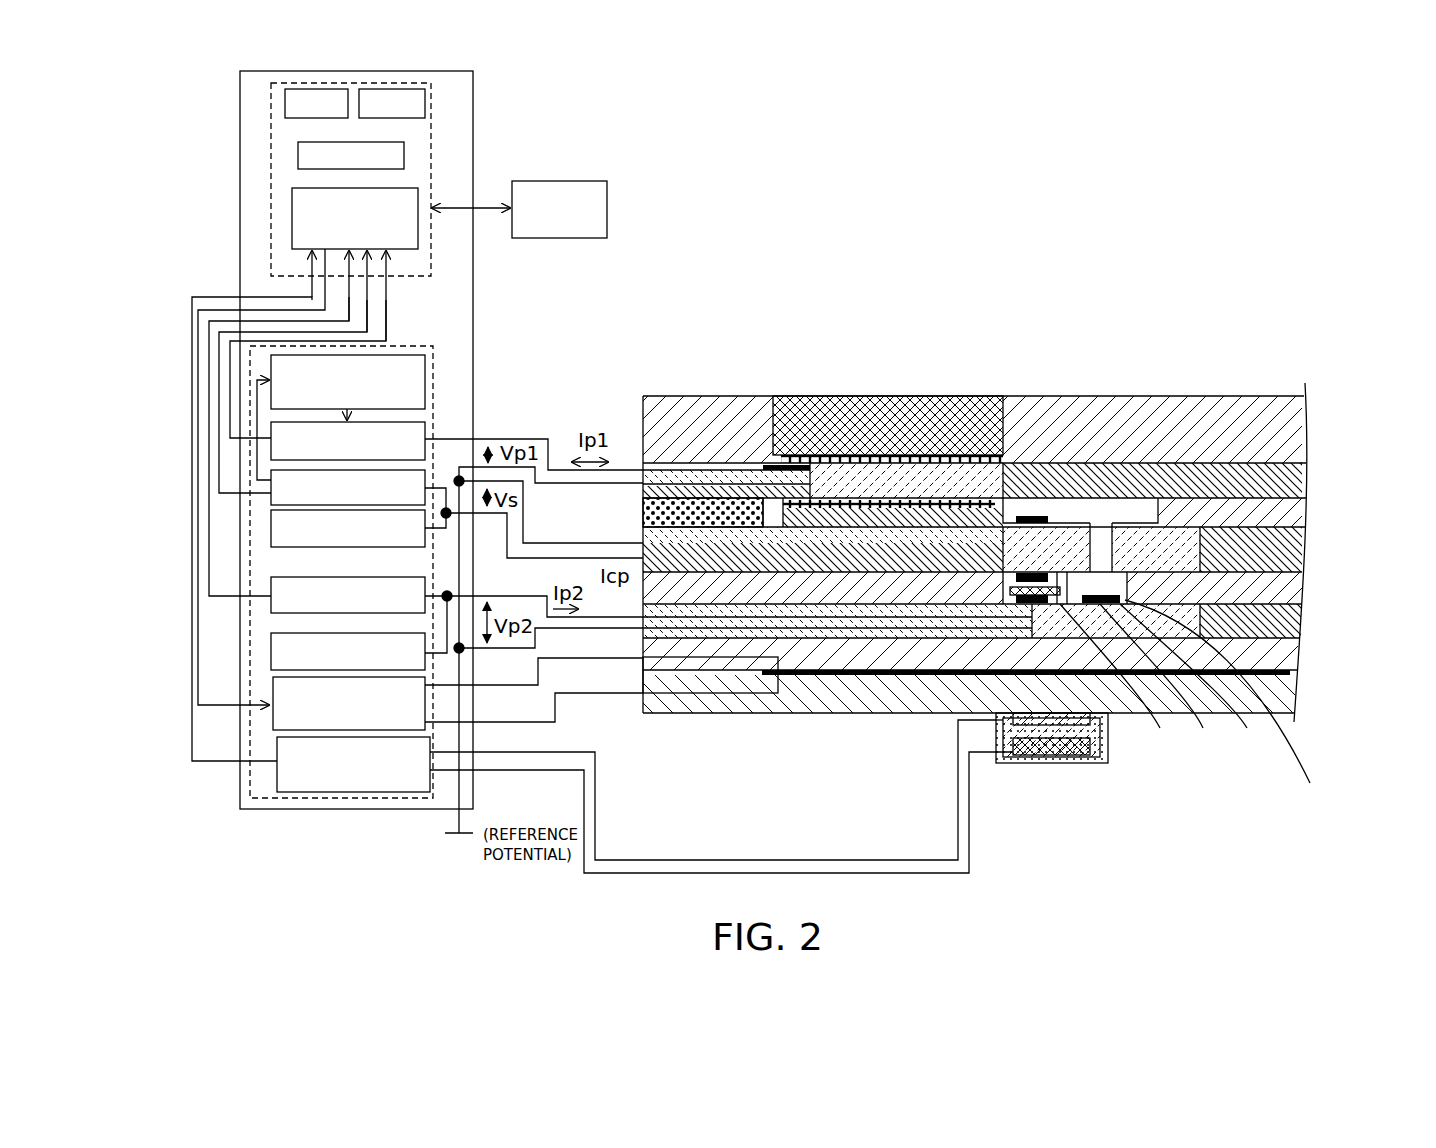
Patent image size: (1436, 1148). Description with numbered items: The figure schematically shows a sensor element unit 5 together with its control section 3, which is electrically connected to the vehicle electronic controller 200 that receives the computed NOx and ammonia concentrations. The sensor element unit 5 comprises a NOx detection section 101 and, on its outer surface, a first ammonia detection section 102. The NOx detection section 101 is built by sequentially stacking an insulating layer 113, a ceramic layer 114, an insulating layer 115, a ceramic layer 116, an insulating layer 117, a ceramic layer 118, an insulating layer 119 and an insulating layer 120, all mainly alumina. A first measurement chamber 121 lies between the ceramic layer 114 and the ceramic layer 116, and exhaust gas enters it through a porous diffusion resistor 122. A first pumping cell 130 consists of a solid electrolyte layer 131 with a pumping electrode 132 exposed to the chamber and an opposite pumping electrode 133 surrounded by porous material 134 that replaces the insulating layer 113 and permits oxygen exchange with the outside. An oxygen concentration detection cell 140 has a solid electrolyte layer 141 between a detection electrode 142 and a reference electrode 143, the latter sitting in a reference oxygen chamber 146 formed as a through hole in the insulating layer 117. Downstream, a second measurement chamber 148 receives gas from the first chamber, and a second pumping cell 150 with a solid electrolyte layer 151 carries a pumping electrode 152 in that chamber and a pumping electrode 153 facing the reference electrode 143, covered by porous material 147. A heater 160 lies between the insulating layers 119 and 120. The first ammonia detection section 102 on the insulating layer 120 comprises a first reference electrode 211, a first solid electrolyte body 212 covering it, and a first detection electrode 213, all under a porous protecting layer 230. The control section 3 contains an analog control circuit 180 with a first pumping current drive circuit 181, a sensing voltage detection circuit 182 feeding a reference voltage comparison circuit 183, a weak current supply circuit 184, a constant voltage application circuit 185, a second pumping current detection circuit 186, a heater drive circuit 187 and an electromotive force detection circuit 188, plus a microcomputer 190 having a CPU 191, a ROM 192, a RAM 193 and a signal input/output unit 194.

The control section 3 is at (562, 113).
The sensor element unit 5 is at (1238, 218).
The NOx detection section 101 is at (840, 182).
The first ammonia detection section 102 is at (1074, 798).
The insulating layer 113 is at (1303, 430).
The ceramic layer 114 is at (1303, 483).
The insulating layer 115 is at (973, 547).
The ceramic layer 116 is at (1303, 545).
The insulating layer 117 is at (1012, 687).
The ceramic layer 118 is at (1301, 618).
The insulating layer 119 is at (1012, 645).
The insulating layer 120 is at (1297, 688).
The first measurement chamber 121 is at (793, 520).
The diffusion resistor 122 is at (643, 510).
The first pumping cell 130 is at (864, 386).
The solid electrolyte layer 131 is at (875, 488).
The pumping electrode 132 is at (785, 503).
The pumping electrode 133 is at (818, 456).
The porous material 134 is at (930, 396).
The oxygen concentration detection cell 140 is at (916, 683).
The solid electrolyte layer 141 is at (1030, 591).
The detection electrode 142 is at (1016, 578).
The reference electrode 143 is at (1040, 600).
The reference oxygen chamber 146 is at (1062, 592).
The porous material 147 is at (1085, 599).
The second measurement chamber 148 is at (1341, 584).
The second pumping cell 150 is at (1170, 696).
The solid electrolyte layer 151 is at (1161, 676).
The pumping electrode 152 is at (1140, 748).
The pumping electrode 153 is at (1120, 676).
The heater 160 is at (1297, 708).
The control circuit 180 is at (433, 346).
The Ip1 drive circuit 181 is at (425, 430).
The Vs detection circuit 182 is at (425, 478).
The reference voltage comparison circuit 183 is at (425, 363).
The Icp supply circuit 184 is at (425, 540).
The Vp2 application circuit 185 is at (271, 650).
The Ip2 detection circuit 186 is at (425, 585).
The heater drive circuit 187 is at (273, 690).
The electromotive force detection circuit 188 is at (277, 750).
The microcomputer 190 is at (407, 83).
The CPU 191 is at (404, 155).
The ROM 192 is at (285, 101).
The RAM 193 is at (425, 101).
The signal input/output unit 194 is at (292, 223).
The electronic controller 200 is at (607, 210).
The first reference electrode 211 is at (1100, 745).
The first solid electrolyte body 212 is at (1093, 733).
The first detection electrode 213 is at (1070, 756).
The protecting layer 230 is at (997, 782).